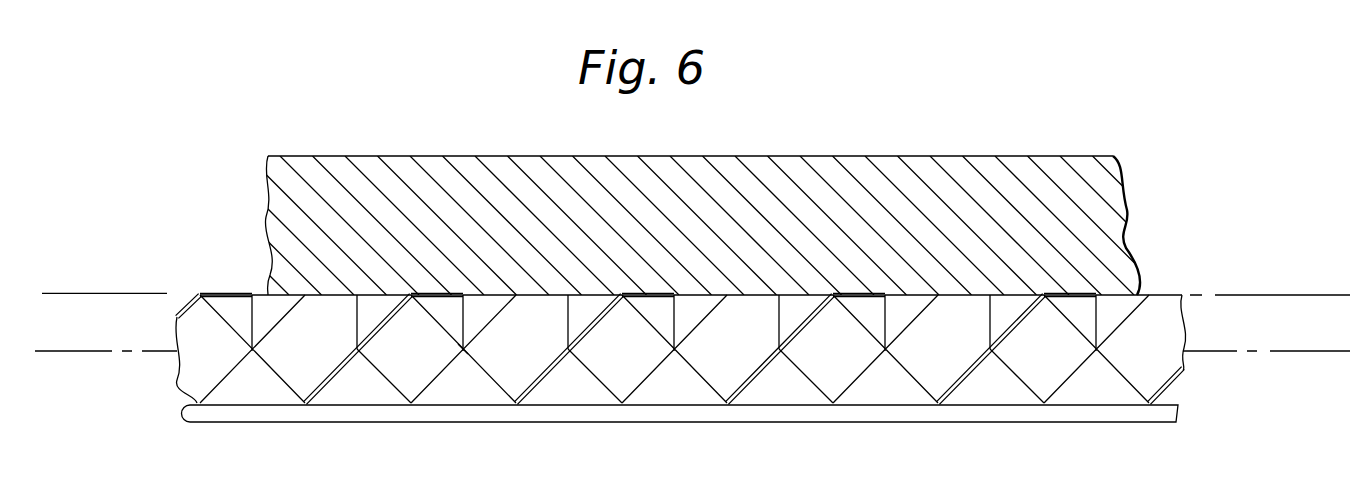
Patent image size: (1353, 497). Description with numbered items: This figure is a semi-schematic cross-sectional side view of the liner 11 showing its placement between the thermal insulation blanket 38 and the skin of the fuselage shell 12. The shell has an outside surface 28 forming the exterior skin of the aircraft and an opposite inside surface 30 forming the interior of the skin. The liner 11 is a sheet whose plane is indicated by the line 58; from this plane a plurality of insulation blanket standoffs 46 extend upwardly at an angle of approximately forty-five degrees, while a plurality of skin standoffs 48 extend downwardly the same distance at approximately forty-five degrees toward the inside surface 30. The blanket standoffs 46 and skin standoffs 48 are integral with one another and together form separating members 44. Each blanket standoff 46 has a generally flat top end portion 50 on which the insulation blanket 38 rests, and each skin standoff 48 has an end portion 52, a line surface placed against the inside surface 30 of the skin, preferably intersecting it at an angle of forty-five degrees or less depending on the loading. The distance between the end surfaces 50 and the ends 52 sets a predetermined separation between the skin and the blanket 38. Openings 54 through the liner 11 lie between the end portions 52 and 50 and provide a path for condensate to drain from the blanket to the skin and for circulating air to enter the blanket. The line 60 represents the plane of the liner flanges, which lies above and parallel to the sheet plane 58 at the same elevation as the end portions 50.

The liner 11 is at (1195, 318).
The fuselage shell 12 is at (385, 438).
The outside surface of fuselage skin 28 is at (1128, 423).
The inside surface of fuselage skin 30 is at (262, 405).
The thermal insulation blanket 38 is at (900, 177).
The separating members 44 is at (345, 355).
The insulation blanket standoffs 46 is at (178, 312).
The skin standoffs 48 is at (338, 376).
The top end portion of blanket standoff 50 is at (217, 294).
The end portion of skin standoff 52 is at (305, 402).
The openings 54 is at (472, 356).
The plane of the liner sheet 58 is at (1272, 352).
The plane of the flanges 60 is at (1262, 295).